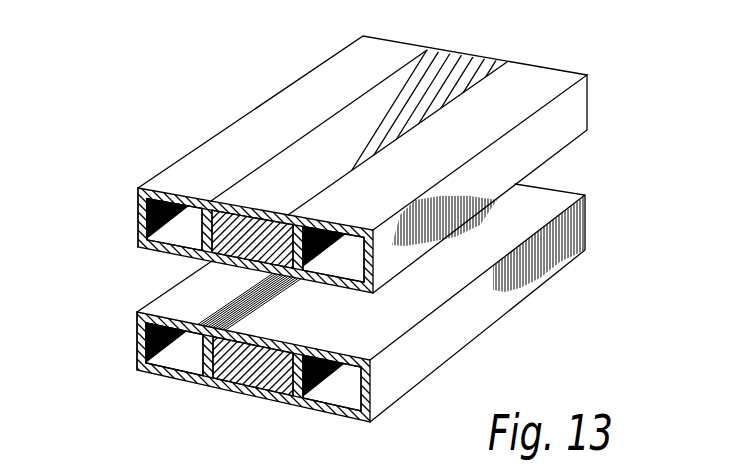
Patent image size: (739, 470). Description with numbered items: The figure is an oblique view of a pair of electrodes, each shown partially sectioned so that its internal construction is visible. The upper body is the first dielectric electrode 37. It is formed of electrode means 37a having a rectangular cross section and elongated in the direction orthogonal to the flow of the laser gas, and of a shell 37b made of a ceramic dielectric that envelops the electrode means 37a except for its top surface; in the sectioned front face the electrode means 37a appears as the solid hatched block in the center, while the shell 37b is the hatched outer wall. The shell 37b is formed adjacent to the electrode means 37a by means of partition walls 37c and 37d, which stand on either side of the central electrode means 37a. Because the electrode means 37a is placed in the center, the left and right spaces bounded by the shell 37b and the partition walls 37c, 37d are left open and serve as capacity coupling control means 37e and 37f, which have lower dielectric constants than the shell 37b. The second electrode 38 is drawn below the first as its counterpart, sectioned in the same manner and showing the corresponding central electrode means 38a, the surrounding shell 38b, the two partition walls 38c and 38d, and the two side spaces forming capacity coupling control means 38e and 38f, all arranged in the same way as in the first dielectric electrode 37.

The first dielectric electrode 37 is at (361, 235).
The electrode means 37a is at (275, 217).
The shell 37b is at (140, 207).
The partition wall 37c is at (210, 212).
The partition wall 37d is at (300, 230).
The capacity coupling control means 37e is at (168, 233).
The capacity coupling control means 37f is at (333, 262).
The lower hollow profile member 38 is at (320, 275).
The solid central web portion of lower member 38a is at (252, 382).
The side wall of lower member 38b is at (137, 337).
The partition wall of lower member 38c is at (207, 380).
The partition wall of lower member 38d is at (300, 385).
The hollow channel of lower member 38e is at (165, 353).
The hollow channel of lower member 38f is at (343, 386).